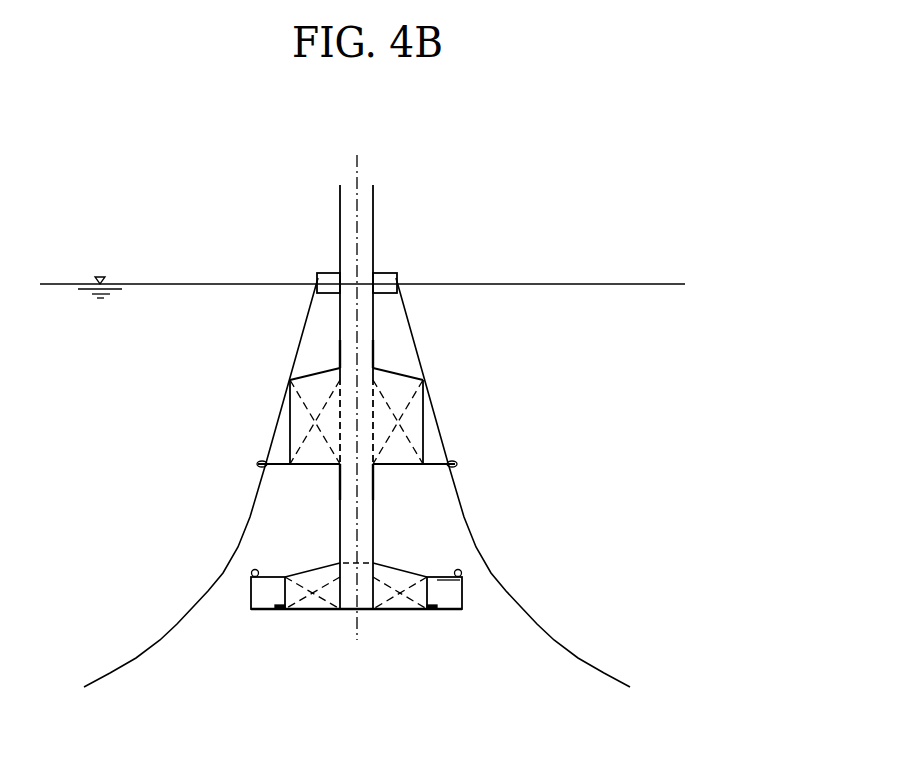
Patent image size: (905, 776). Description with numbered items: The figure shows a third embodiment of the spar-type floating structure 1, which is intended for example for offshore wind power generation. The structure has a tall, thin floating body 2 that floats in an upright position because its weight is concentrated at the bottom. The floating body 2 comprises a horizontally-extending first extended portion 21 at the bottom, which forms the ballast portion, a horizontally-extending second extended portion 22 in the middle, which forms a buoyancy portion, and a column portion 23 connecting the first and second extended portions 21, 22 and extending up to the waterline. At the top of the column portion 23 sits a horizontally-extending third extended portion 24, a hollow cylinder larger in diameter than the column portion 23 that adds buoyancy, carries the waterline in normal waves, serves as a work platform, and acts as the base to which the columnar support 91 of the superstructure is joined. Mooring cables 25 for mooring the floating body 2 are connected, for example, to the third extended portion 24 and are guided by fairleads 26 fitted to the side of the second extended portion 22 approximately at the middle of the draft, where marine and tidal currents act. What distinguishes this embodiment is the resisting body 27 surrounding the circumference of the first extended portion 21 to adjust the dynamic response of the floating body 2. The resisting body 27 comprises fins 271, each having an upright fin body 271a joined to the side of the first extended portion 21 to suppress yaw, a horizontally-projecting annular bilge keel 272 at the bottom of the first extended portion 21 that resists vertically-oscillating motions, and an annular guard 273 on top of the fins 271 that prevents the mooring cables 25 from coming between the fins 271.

The spar-type floating structure 1 is at (273, 238).
The floating body 2 is at (272, 360).
The first extended portion 21 is at (403, 612).
The second extended portion 22 is at (398, 467).
The column portion 23 is at (343, 351).
The third extended portion 24 is at (318, 272).
The mooring cables 25 is at (250, 517).
The fairleads 26 is at (258, 464).
The resisting body 27 is at (242, 620).
The fins 271 is at (250, 605).
The fin body 271a is at (455, 611).
The bilge keel 272 is at (279, 611).
The guard 273 is at (256, 569).
The columnar support 91 is at (375, 210).